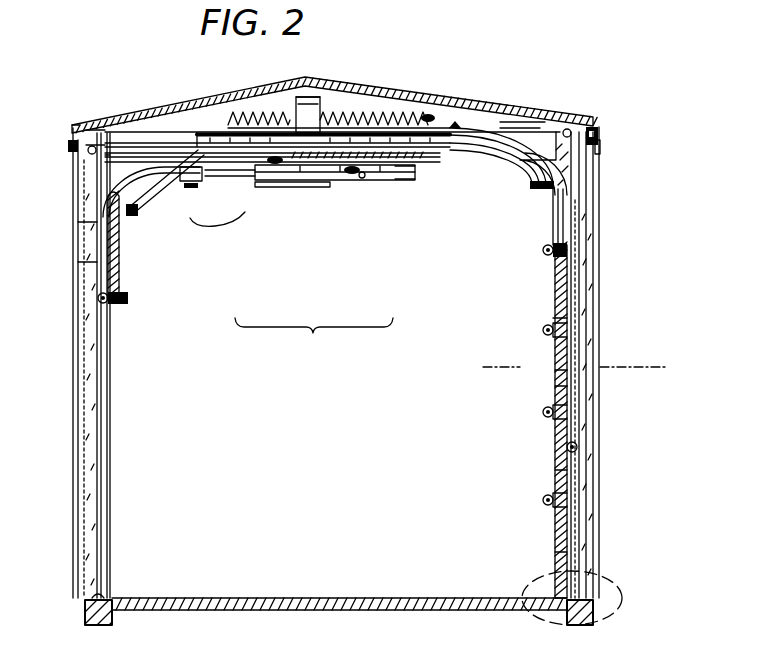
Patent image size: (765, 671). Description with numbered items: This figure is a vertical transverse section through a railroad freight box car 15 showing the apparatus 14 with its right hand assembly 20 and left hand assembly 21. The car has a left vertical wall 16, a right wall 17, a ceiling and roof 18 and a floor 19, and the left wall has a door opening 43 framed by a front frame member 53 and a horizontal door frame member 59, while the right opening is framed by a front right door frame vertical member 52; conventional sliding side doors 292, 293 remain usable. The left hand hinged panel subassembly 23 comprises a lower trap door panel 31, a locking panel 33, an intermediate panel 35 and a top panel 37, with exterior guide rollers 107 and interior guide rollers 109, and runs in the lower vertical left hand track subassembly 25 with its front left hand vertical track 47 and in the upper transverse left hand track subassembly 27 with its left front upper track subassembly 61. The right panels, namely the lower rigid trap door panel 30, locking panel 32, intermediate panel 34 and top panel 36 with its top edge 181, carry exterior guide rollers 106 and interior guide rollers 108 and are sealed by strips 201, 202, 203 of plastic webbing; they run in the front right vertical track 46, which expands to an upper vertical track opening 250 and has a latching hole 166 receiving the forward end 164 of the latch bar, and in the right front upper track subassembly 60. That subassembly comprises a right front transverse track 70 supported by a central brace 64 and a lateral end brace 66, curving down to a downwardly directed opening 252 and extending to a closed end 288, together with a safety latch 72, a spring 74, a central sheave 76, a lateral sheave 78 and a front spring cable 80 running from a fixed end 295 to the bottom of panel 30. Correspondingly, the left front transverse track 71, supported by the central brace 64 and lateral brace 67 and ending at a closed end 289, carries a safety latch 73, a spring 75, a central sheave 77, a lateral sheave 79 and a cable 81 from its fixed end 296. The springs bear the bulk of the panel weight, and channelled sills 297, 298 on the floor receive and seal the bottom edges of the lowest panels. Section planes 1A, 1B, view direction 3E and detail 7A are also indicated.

The apparatus 14 is at (314, 347).
The railroad freight box car 15 is at (76, 124).
The left vertical wall 16 is at (82, 484).
The right wall 17 is at (585, 497).
The ceiling and roof 18 is at (213, 98).
The floor 19 is at (392, 600).
The right hand assembly 20 is at (462, 307).
The left hand assembly 21 is at (194, 307).
The left hand hinged panel subassembly 23 is at (158, 252).
The lower vertical left hand track subassembly 25 is at (112, 482).
The upper transverse left hand track subassembly 27 is at (412, 178).
The lower rigid trap door panel 30 is at (560, 552).
The lower trap door panel 31 is at (120, 275).
The locking panel 32 is at (560, 470).
The locking panel 33 is at (138, 200).
The intermediate panel 34 is at (560, 378).
The intermediate panel 35 is at (272, 182).
The top panel 36 is at (555, 288).
The top panel 37 is at (345, 182).
The door opening 43 is at (82, 396).
The front right vertical track 46 is at (575, 388).
The front left hand vertical track 47 is at (95, 353).
The front right door frame vertical member 52 is at (588, 268).
The front frame member 53 is at (86, 263).
The horizontal door frame member 59 is at (92, 128).
The right front upper track subassembly 60 is at (522, 165).
The left front upper track subassembly 61 is at (217, 227).
The central brace 64 is at (320, 107).
The lateral end brace 66 is at (600, 146).
The lateral brace 67 is at (78, 138).
The right front transverse track 70 is at (522, 128).
The front transverse track 71 is at (288, 183).
The safety latch 72 is at (455, 121).
The safety latch 73 is at (195, 189).
The spring 74 is at (275, 115).
The spring 75 is at (428, 158).
The central sheave 76 is at (428, 114).
The central sheave 77 is at (252, 181).
The lateral sheave 78 is at (594, 128).
The lateral sheave 79 is at (90, 152).
The front spring cable 80 is at (580, 208).
The cable 81 is at (90, 222).
The exterior guide rollers 106 is at (562, 328).
The exterior guide rollers 107 is at (98, 297).
The interior guide rollers 108 is at (540, 257).
The interior guide rollers 109 is at (133, 299).
The forward end of latch bar 164 is at (574, 444).
The right door front latching hole 166 is at (578, 450).
The top edge 181 is at (362, 178).
The strip of plastic webbing 201 is at (558, 332).
The strip of plastic webbing 202 is at (558, 415).
The strip of plastic webbing 203 is at (560, 513).
The upper vertical track opening 250 is at (562, 160).
The downwardly directed opening 252 is at (549, 191).
The closed end 288 is at (198, 143).
The closed end 289 is at (412, 170).
The sliding side door 292 is at (85, 442).
The sliding side door 293 is at (598, 525).
The fixed end 295 is at (522, 112).
The fixed end 296 is at (110, 153).
The inwardly sloped channelled sill 297 is at (598, 612).
The sill 298 is at (112, 598).
The section line 1A is at (488, 366).
The section line 1B is at (620, 366).
The view direction 3E is at (649, 348).
The detail 7A is at (622, 596).